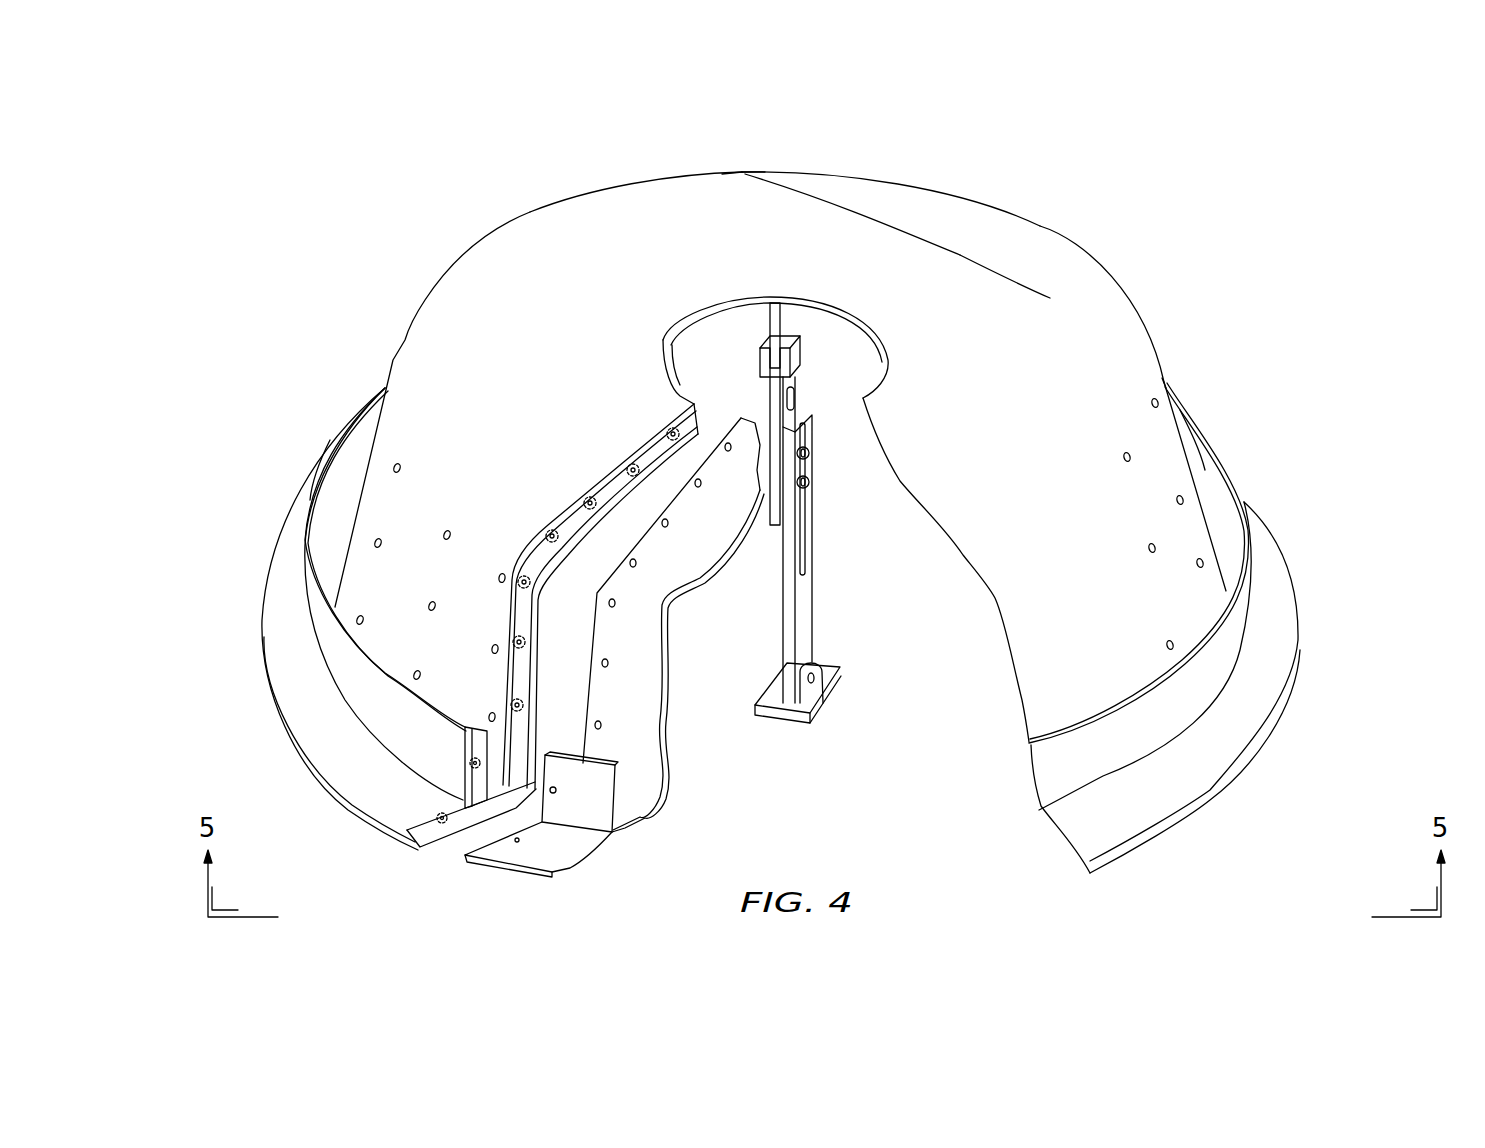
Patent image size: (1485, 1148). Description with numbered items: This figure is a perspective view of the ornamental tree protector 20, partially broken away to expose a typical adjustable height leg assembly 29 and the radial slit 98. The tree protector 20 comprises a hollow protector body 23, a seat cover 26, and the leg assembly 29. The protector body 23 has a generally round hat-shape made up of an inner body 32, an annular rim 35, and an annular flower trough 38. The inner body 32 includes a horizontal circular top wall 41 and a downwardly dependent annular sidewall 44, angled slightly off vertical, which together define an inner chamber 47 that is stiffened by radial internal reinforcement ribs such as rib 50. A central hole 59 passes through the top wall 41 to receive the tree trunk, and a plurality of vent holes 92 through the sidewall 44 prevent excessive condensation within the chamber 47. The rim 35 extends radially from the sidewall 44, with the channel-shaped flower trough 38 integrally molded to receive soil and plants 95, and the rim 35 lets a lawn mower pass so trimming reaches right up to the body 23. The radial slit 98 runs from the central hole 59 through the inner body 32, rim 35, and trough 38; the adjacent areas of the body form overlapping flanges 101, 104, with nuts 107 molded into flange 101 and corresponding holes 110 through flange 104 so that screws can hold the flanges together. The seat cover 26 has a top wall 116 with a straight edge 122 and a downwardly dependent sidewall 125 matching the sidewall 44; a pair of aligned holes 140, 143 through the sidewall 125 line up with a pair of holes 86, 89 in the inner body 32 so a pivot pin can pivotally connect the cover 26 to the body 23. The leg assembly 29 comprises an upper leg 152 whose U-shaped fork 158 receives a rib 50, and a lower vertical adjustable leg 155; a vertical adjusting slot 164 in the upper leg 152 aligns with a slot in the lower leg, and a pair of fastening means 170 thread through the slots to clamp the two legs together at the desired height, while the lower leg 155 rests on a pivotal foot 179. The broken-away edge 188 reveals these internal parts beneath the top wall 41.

The ornamental tree protector 20 is at (1203, 188).
The protector body 23 is at (342, 372).
The seat cover 26 is at (1082, 233).
The adjustable height leg assembly 29 is at (845, 585).
The inner body 32 is at (418, 291).
The annular rim 35 is at (275, 697).
The annular flower trough 38 is at (313, 478).
The top wall 41 is at (500, 308).
The annular sidewall 44 is at (353, 517).
The inner chamber 47 is at (722, 675).
The internal reinforcement rib 50 is at (770, 318).
The central hole 59 is at (666, 378).
The hole 86 is at (1166, 380).
The hole 89 is at (756, 172).
The vent holes 92 is at (362, 613).
The interior 95 is at (343, 465).
The radial slit 98 is at (533, 603).
The overlapping flange 101 is at (417, 837).
The overlapping flange 104 is at (465, 858).
The nuts 107 is at (440, 815).
The holes 110 is at (553, 790).
The top wall 116 is at (956, 251).
The straight edge 122 is at (1047, 298).
The sidewall 125 is at (1160, 320).
The hole 140 is at (1167, 384).
The hole 143 is at (727, 174).
The upper leg 152 is at (778, 527).
The lower vertical adjustable leg 155 is at (790, 610).
The fork 158 is at (762, 356).
The vertical adjusting slot 164 is at (795, 398).
The fastening means 170 is at (812, 478).
The pivotal foot 179 is at (813, 718).
The edge 188 is at (757, 487).